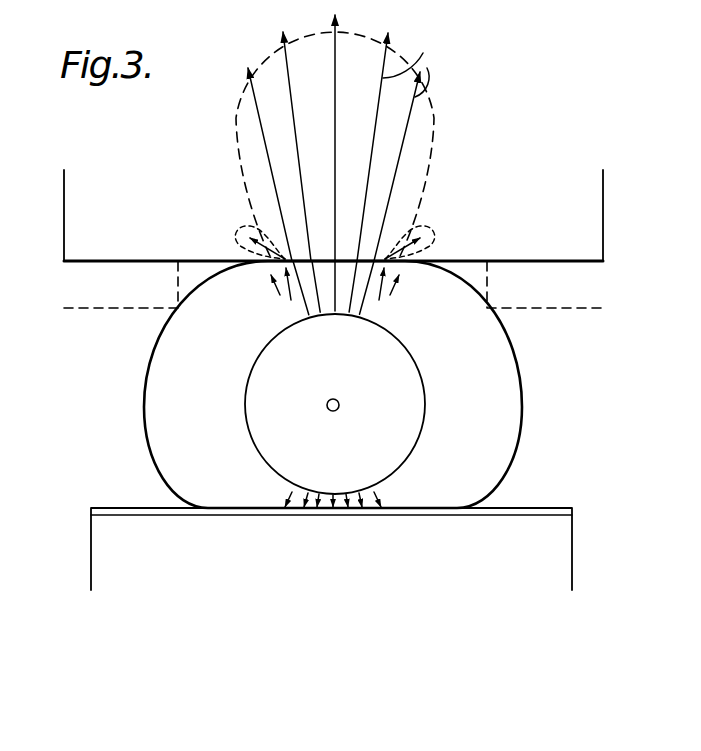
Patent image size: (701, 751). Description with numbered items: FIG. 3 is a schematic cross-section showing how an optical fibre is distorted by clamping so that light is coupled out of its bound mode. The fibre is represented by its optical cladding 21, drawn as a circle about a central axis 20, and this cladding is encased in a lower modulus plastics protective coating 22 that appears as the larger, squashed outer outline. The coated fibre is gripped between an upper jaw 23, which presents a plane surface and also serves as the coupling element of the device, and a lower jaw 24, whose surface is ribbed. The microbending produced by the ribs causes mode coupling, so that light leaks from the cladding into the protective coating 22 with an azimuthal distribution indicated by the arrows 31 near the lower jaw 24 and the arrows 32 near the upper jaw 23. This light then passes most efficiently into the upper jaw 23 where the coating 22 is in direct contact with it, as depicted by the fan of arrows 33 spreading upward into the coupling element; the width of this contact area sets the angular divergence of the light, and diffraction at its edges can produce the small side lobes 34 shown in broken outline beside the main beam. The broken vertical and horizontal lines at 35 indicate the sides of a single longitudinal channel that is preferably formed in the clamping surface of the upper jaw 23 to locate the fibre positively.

The axis of roller 20 is at (338, 401).
The optical cladding 21 is at (398, 437).
The protective coating 22 is at (495, 438).
The upper jaw 23 is at (78, 204).
The lower jaw 24 is at (100, 535).
The arrows 31 is at (288, 492).
The arrows 32 is at (293, 300).
The arrows 33 is at (335, 67).
The side lobes 34 is at (400, 256).
The sides of channel 35 is at (178, 298).